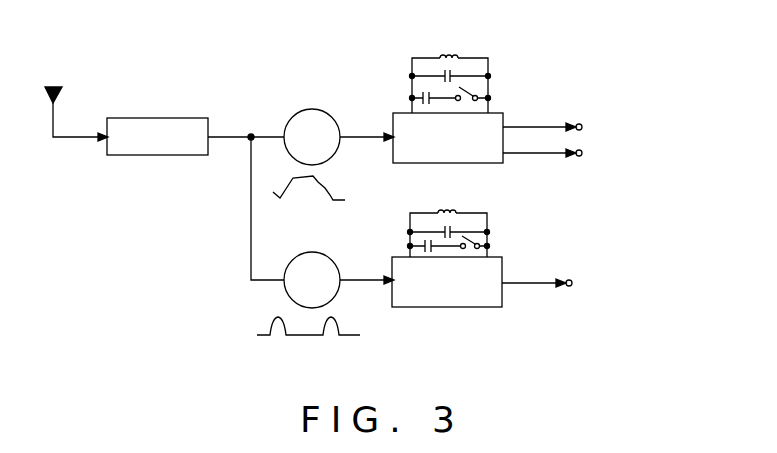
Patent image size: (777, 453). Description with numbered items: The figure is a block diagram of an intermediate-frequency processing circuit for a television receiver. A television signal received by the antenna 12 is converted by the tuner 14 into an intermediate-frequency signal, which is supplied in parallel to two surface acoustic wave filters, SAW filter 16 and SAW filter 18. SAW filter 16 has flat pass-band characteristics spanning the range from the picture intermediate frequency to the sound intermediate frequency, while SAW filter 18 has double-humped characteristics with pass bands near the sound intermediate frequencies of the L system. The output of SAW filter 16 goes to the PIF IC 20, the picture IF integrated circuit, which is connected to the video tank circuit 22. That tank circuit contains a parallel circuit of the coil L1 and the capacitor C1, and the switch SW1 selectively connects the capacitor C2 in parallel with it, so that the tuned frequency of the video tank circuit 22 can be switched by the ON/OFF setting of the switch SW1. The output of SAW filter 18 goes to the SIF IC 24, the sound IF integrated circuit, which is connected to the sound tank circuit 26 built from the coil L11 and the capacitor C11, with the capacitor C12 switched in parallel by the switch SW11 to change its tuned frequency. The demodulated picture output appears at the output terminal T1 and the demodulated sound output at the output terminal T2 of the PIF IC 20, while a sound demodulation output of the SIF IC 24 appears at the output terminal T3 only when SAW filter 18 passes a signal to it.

The antenna 12 is at (65, 92).
The tuner 14 is at (182, 118).
The surface acoustic wave filter 16 is at (295, 113).
The surface acoustic wave filter 18 is at (297, 257).
The PIF IC 20 is at (503, 160).
The video tank circuit 22 is at (454, 61).
The SIF IC 24 is at (502, 305).
The sound tank circuit 26 is at (456, 215).
The capacitor C1 is at (440, 72).
The capacitor C2 is at (422, 97).
The coil L1 is at (450, 58).
The switch SW1 is at (479, 93).
The capacitor C11 is at (438, 229).
The capacitor C12 is at (422, 246).
The coil L11 is at (442, 209).
The switch SW11 is at (481, 244).
The output terminal T1 is at (601, 128).
The output terminal T2 is at (596, 154).
The output terminal T3 is at (591, 284).